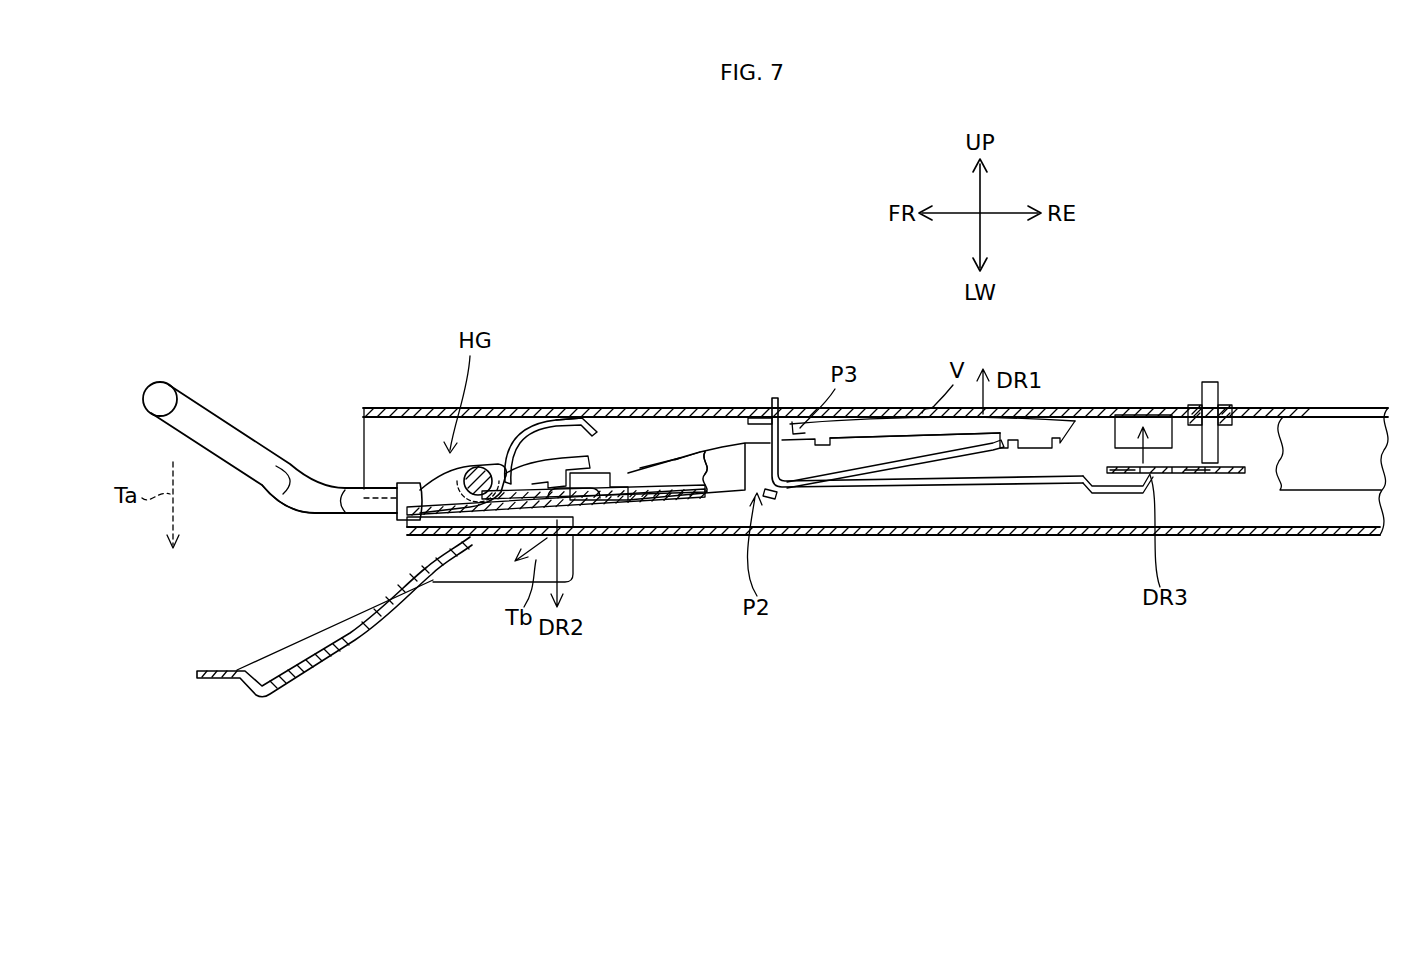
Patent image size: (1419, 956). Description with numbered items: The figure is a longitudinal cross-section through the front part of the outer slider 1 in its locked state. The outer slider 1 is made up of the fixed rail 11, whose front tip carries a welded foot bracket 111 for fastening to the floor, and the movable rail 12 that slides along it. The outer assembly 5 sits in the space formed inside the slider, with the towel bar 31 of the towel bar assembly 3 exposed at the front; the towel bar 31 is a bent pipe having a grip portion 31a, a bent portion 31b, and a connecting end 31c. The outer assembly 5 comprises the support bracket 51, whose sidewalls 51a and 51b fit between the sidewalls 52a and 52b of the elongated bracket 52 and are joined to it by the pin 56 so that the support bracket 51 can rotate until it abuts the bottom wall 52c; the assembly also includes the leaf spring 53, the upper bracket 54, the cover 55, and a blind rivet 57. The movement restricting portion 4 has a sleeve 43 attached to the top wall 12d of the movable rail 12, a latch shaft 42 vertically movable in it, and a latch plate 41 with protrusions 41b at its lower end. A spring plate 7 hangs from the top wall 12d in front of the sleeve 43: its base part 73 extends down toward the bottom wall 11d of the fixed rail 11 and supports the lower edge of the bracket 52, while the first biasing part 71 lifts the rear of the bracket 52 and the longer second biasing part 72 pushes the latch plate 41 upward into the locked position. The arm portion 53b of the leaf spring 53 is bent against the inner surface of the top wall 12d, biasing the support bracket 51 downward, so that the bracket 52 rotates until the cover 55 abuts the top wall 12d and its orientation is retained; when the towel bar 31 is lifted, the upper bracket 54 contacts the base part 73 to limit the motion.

The outer slider 1 is at (775, 264).
The towel bar assembly 3 is at (288, 528).
The movement restricting portion 4 is at (1266, 443).
The outer assembly 5 is at (647, 441).
The spring plate 7 is at (780, 420).
The fixed rail 11 is at (637, 537).
The bottom wall 11d is at (832, 537).
The movable rail 12 is at (400, 407).
The top wall 12d is at (906, 407).
The towel bar 31 is at (193, 395).
The grip portion 31a is at (165, 380).
The bent portion 31b is at (270, 443).
The connecting end 31c is at (370, 487).
The latch plate 41 is at (1232, 468).
The protrusion 41b is at (1120, 475).
The latch shaft 42 is at (1222, 437).
The sleeve 43 is at (1190, 404).
The support bracket 51 is at (433, 478).
The sidewall 51a is at (478, 491).
The sidewall 51b is at (503, 460).
The bracket 52 is at (733, 498).
The sidewall 52a is at (714, 470).
The sidewall 52b is at (655, 462).
The bottom wall 52c is at (683, 465).
The leaf spring 53 is at (548, 430).
The arm portion 53b is at (547, 432).
The upper bracket 54 is at (842, 432).
The cover 55 is at (1140, 415).
The pin 56 is at (480, 466).
The blind rivet 57 is at (621, 465).
The first biasing part 71 is at (950, 462).
The second biasing part 72 is at (1017, 486).
The base part 73 is at (792, 470).
The foot bracket 111 is at (222, 668).